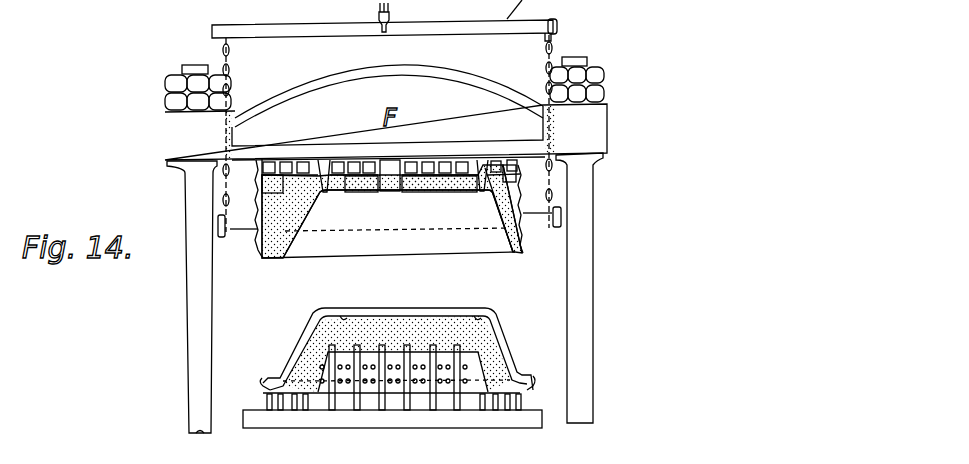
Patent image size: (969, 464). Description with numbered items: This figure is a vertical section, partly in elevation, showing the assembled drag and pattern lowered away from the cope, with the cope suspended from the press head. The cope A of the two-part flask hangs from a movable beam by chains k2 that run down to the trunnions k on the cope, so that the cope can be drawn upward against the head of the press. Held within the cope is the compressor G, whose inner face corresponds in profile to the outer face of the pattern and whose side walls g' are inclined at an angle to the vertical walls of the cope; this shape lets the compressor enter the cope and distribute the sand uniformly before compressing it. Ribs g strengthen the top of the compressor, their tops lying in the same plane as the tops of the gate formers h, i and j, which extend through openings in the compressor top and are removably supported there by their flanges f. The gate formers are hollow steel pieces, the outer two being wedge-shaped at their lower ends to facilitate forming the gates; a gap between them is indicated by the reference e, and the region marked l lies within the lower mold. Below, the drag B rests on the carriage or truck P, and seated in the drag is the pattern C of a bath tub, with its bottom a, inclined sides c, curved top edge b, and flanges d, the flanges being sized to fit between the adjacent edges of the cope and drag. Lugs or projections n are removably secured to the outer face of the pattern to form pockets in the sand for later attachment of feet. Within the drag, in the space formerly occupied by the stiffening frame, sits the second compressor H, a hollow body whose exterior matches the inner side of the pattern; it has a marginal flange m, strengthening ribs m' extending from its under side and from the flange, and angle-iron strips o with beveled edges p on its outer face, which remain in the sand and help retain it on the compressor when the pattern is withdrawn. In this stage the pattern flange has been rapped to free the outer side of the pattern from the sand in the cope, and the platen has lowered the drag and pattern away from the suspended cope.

The chains k2 is at (230, 72).
The flanges f is at (311, 173).
The gate former h is at (332, 160).
The gate former i is at (390, 175).
The gate former j is at (480, 172).
The ribs g is at (380, 189).
The compressor G is at (526, 180).
The side walls of the compressor g' is at (208, 200).
The upper die e is at (302, 212).
The cope A is at (260, 238).
The trunnions k is at (243, 224).
The inclined sides c is at (307, 330).
The pattern C is at (385, 308).
The bottom a is at (430, 308).
The lugs or projections n is at (344, 312).
The mould cavity l is at (403, 356).
The second compressor H is at (380, 346).
The ribs or strips o is at (373, 370).
The drag B is at (263, 395).
The strengthening ribs m' is at (394, 424).
The carriage or truck P is at (462, 418).
The beveled or sharpened edges p is at (382, 430).
The flanges d is at (263, 377).
The curved top edge b is at (275, 378).
The marginal flange m is at (575, 365).